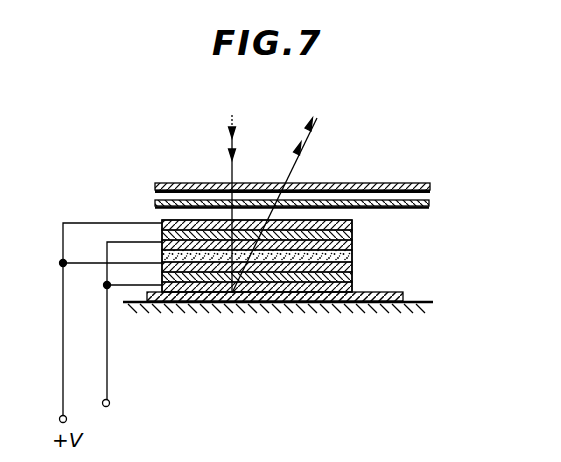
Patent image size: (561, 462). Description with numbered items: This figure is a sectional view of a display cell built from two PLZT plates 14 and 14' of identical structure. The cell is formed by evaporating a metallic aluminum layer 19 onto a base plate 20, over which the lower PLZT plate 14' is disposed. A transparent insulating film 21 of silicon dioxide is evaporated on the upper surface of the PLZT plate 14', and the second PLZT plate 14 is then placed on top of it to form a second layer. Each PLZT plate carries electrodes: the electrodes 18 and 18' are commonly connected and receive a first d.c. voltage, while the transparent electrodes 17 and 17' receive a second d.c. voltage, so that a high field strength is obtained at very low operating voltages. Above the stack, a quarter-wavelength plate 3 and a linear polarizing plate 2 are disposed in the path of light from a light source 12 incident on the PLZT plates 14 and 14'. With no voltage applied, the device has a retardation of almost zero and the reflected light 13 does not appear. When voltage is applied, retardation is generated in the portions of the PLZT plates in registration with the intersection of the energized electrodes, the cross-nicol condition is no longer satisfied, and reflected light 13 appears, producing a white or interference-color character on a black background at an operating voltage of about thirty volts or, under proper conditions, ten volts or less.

The linear polarizing plate 2 is at (430, 188).
The ¼ wavelength plate 3 is at (429, 204).
The light source 12 is at (233, 193).
The reflected light 13 is at (280, 193).
The PLZT plate 14 is at (296, 241).
The PLZT plate 14' is at (276, 310).
The transparent electrode 17 is at (277, 254).
The transparent electrode 17' is at (257, 316).
The electrode 18 is at (284, 225).
The electrode 18' is at (286, 279).
The metallic aluminum layer 19 is at (278, 306).
The base plate 20 is at (250, 311).
The transparent insulating film 21 is at (352, 258).